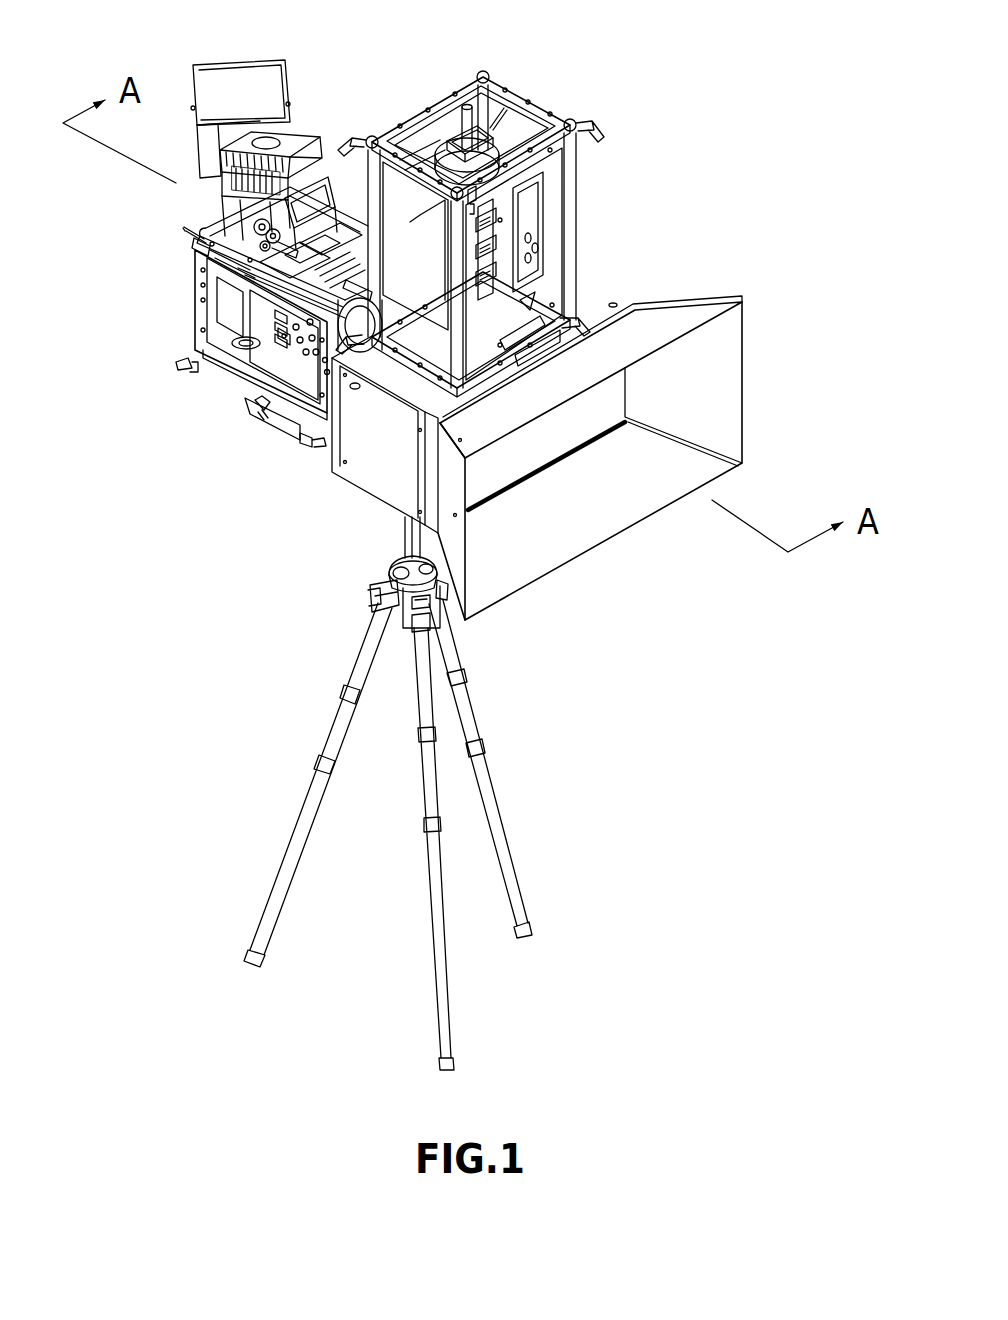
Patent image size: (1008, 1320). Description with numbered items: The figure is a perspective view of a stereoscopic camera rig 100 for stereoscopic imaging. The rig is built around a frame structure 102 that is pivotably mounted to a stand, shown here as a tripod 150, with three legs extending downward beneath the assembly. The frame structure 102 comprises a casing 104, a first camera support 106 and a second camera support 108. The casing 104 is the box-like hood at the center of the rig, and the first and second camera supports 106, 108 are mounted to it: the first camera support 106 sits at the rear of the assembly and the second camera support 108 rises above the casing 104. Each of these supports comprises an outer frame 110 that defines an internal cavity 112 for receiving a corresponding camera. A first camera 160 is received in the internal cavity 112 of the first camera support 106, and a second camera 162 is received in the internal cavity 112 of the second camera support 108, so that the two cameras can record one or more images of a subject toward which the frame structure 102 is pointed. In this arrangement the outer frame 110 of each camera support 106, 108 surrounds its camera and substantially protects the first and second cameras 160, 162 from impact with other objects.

The stereoscopic camera rig 100 is at (431, 544).
The frame structure 102 is at (371, 313).
The casing 104 is at (590, 414).
The first camera support 106 is at (232, 240).
The second camera support 108 is at (461, 199).
The outer frame 110 is at (371, 259).
The internal cavity 112 is at (350, 230).
The tripod 150 is at (473, 793).
The first camera 160 is at (187, 374).
The second camera 162 is at (434, 115).